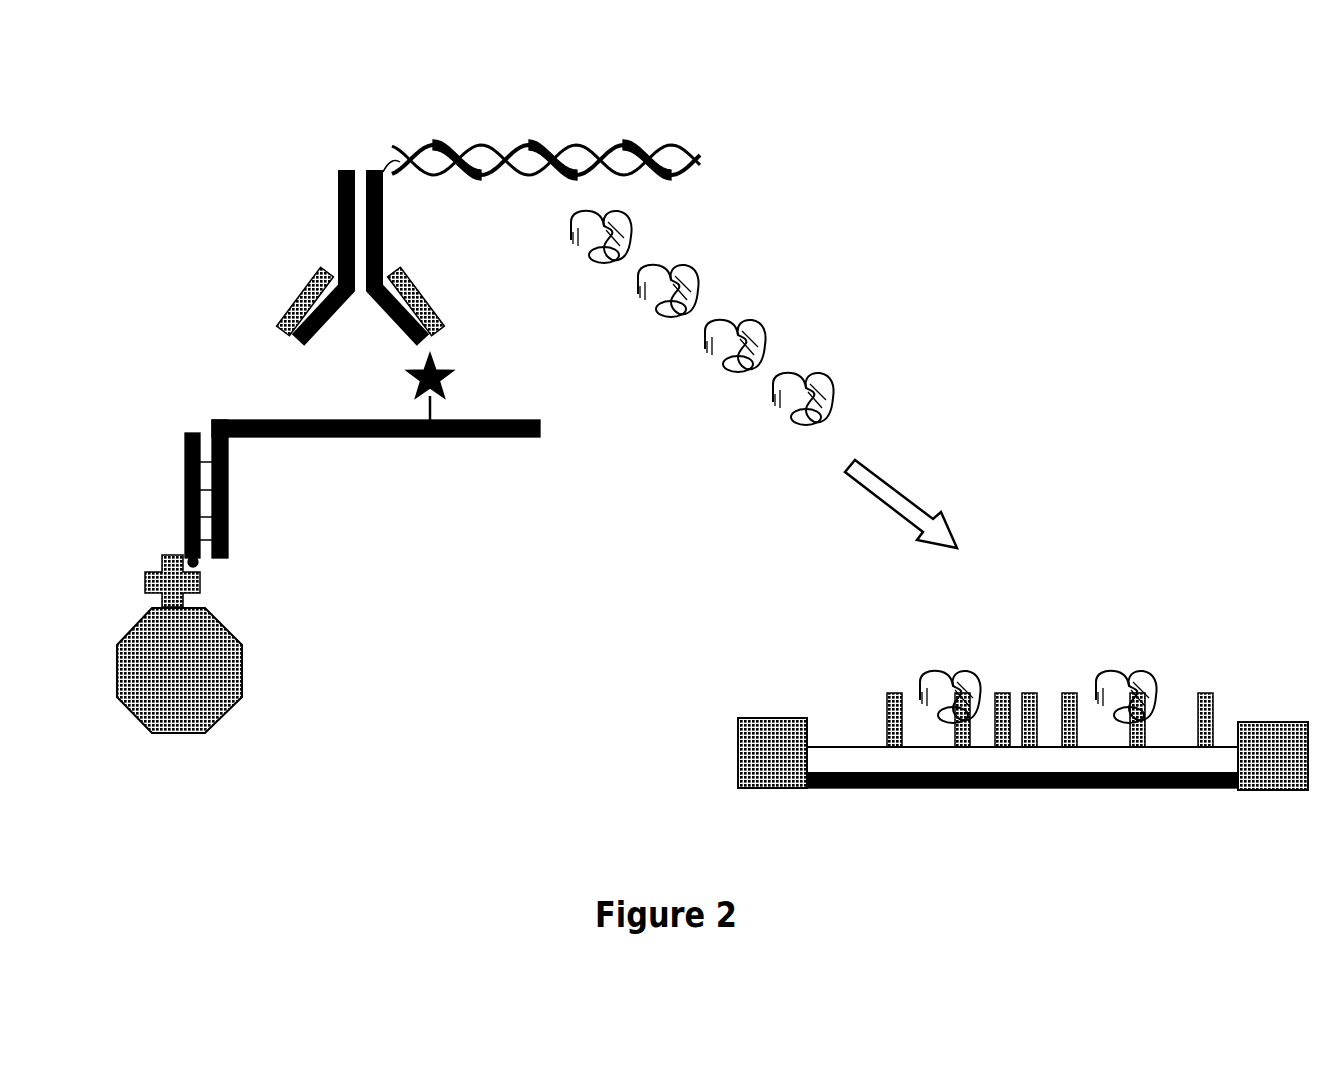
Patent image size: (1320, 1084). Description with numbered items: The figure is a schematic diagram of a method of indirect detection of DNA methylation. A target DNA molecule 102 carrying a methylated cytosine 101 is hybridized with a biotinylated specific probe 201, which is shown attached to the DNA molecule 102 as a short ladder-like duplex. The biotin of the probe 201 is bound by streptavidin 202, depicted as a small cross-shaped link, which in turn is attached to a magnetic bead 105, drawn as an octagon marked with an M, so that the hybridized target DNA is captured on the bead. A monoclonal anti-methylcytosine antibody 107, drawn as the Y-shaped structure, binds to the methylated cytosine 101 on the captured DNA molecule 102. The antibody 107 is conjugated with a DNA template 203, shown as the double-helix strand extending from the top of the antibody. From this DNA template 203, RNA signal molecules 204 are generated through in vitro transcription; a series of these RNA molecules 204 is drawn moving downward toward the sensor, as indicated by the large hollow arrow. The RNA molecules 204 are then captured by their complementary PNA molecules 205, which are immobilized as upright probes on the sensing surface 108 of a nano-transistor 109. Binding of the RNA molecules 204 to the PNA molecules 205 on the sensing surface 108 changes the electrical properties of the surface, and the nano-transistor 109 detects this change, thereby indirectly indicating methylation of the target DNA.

The methylated cytosine 101 is at (461, 363).
The target DNA molecule 102 is at (375, 448).
The magnetic beads 105 is at (280, 677).
The monoclonal anti-methylcytosine antibody 107 is at (322, 232).
The sensing surface 108 is at (847, 732).
The nano-transistor 109 is at (1008, 803).
The biotinylated specific probe 201 is at (172, 500).
The streptavidin 202 is at (212, 583).
The DNA template 203 is at (525, 137).
The RNA signal molecules 204 is at (783, 288).
The PNA molecules 205 is at (1228, 680).